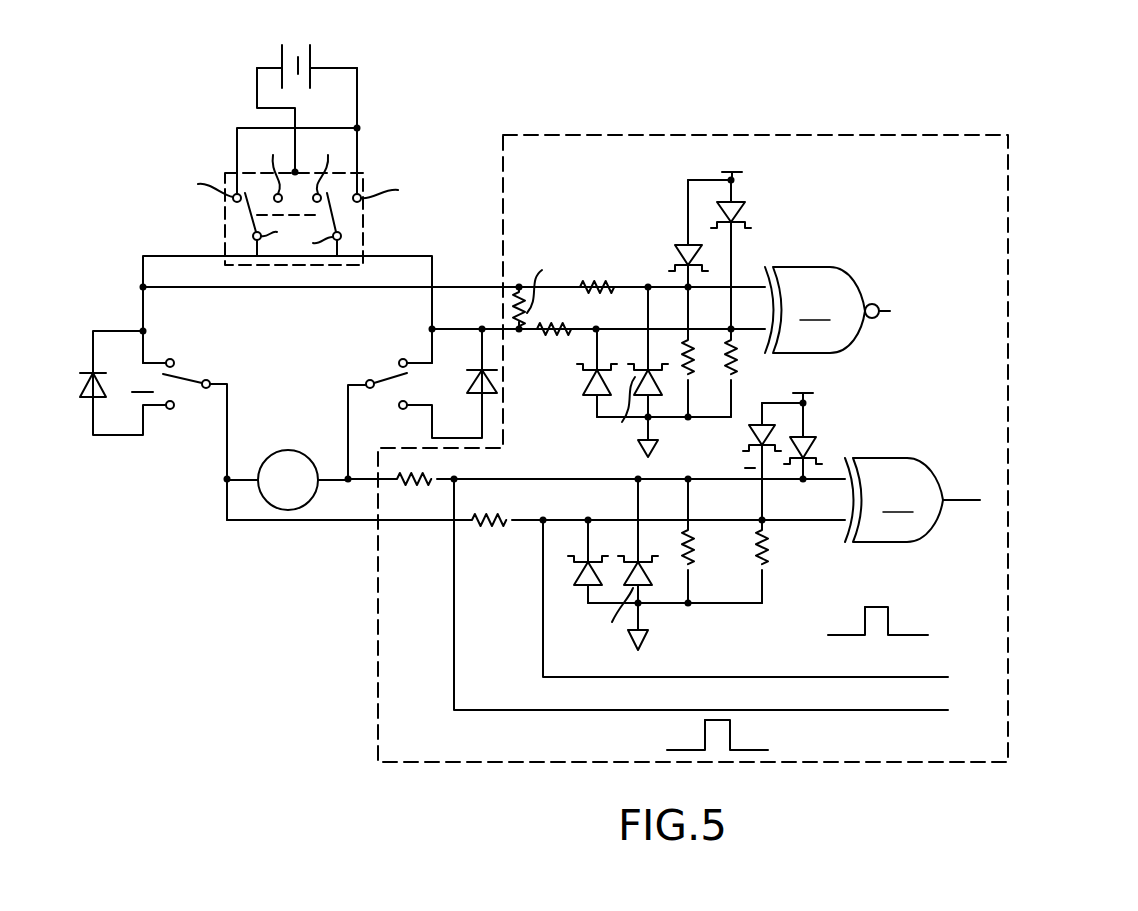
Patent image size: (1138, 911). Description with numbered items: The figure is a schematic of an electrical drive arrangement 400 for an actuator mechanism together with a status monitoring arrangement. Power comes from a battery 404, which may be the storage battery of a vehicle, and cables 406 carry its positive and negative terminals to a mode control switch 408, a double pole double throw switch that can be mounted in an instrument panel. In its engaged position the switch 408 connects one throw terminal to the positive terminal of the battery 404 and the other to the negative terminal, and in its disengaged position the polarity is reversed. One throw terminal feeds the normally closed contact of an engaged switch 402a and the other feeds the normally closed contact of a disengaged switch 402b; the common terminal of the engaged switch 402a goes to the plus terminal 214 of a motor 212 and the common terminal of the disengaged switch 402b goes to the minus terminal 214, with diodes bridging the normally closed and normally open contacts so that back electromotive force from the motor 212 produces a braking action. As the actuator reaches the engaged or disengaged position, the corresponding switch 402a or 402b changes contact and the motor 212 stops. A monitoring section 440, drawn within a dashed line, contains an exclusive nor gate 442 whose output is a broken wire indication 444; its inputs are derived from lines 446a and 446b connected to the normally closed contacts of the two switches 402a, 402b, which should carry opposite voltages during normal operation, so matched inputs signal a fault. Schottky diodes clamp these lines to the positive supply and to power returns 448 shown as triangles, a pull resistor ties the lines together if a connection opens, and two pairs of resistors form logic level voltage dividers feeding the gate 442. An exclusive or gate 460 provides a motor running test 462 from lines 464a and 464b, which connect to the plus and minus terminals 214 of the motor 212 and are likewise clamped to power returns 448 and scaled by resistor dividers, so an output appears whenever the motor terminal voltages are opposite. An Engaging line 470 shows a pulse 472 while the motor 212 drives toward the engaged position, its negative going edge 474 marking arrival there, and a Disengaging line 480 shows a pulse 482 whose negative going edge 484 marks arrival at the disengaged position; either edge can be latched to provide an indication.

The test circuit system 400 is at (600, 400).
The battery 404 is at (313, 53).
The cables 406 is at (257, 90).
The mode control switch 408 is at (363, 240).
The engaged switch 402a is at (165, 388).
The disengaged switch 402b is at (428, 389).
The motor 212 is at (270, 507).
The motor terminals 214 is at (243, 480).
The monitoring section 440 is at (890, 135).
The exclusive nor (XNOR) gate 442 is at (815, 310).
The broken wire indication 444 is at (890, 311).
The line 446a is at (288, 290).
The line 446b is at (462, 287).
The power returns 448 is at (658, 450).
The exclusive or (XOR) gate 460 is at (894, 500).
The motor running test 462 is at (958, 500).
The line 464a is at (422, 520).
The line 464b is at (365, 480).
The Engaging line 470 is at (752, 598).
The pulse 472 is at (877, 607).
The negative going edge 474 is at (890, 618).
The Disengaging line 480 is at (715, 614).
The pulse 482 is at (703, 725).
The negative going edge 484 is at (731, 727).